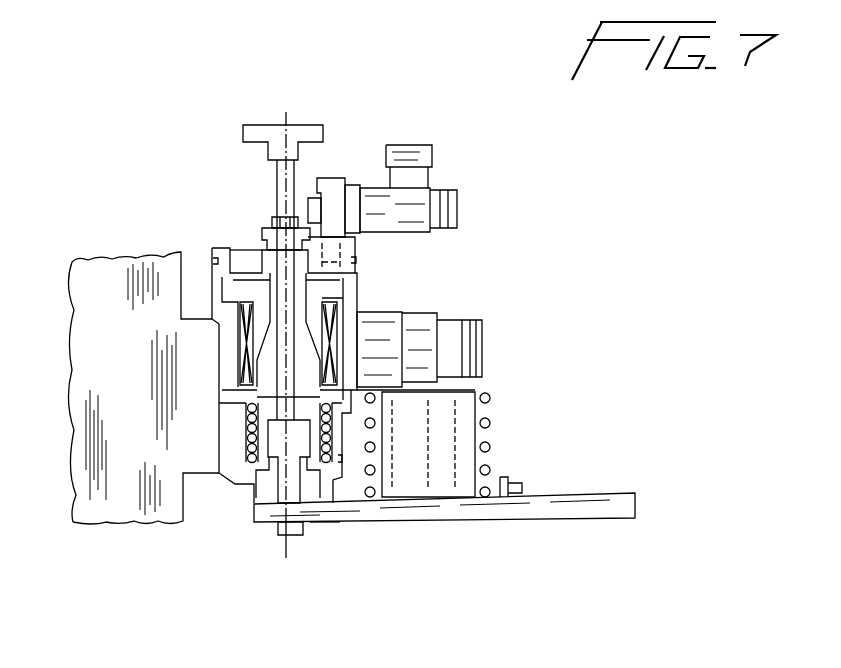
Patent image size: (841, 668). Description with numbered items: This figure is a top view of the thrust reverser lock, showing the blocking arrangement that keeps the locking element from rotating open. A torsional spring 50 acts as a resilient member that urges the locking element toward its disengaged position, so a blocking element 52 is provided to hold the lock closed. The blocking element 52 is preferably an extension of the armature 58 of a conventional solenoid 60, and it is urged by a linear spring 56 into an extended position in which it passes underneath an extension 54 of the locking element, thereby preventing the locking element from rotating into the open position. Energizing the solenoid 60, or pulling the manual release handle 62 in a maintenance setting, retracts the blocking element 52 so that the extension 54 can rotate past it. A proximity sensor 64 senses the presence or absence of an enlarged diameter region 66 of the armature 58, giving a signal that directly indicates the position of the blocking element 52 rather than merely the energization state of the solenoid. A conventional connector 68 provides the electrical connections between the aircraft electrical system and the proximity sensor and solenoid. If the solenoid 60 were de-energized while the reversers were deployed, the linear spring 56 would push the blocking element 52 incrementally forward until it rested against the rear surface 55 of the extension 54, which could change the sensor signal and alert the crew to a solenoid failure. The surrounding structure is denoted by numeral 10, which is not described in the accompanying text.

The wall 10 is at (120, 345).
The torsional spring 50 is at (490, 436).
The blocking element 52 is at (277, 536).
The extension 54 is at (327, 527).
The rear surface 55 is at (343, 496).
The linear spring 56 is at (246, 440).
The armature 58 is at (280, 384).
The solenoid 60 is at (232, 347).
The manual release handle 62 is at (281, 120).
The proximity sensor 64 is at (460, 197).
The enlarged diameter region 66 is at (262, 226).
The connector 68 is at (488, 326).